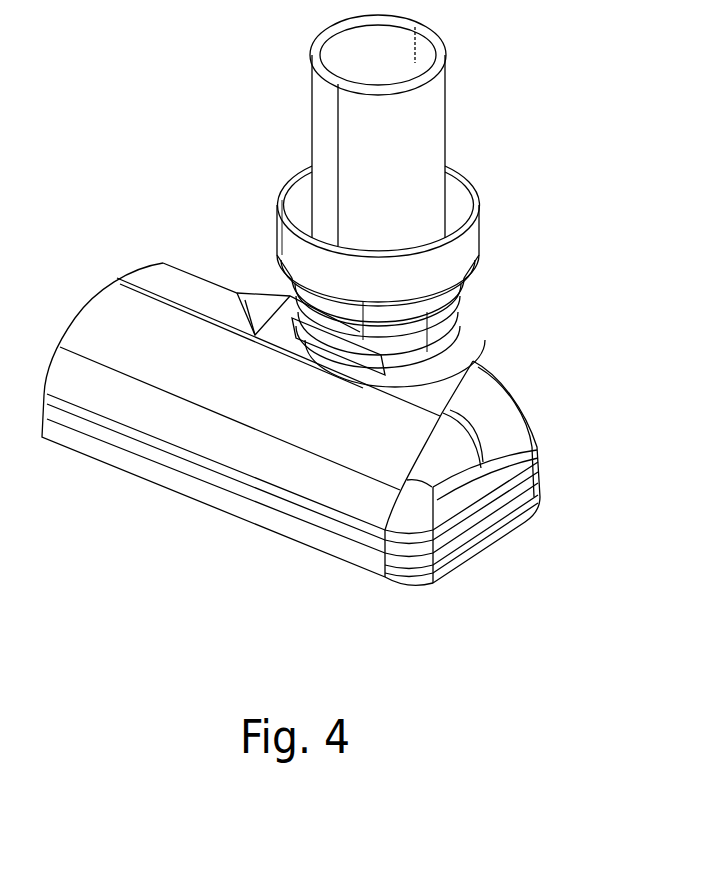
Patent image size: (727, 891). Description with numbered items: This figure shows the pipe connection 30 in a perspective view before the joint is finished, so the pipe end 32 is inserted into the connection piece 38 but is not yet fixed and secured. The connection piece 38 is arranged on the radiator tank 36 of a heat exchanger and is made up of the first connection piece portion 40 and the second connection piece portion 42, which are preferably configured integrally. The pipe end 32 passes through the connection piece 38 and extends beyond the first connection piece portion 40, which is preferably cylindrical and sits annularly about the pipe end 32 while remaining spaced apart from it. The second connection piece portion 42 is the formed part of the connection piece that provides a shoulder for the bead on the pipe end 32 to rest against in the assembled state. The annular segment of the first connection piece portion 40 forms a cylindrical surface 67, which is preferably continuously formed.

The pipe connection 30 is at (542, 171).
The pipe end 32 is at (424, 121).
The radiator tank 36 is at (343, 447).
The connection piece 38 is at (251, 166).
The first connection piece portion 40 is at (447, 260).
The second connection piece portion 42 is at (427, 322).
The cylindrical surface 67 is at (288, 247).